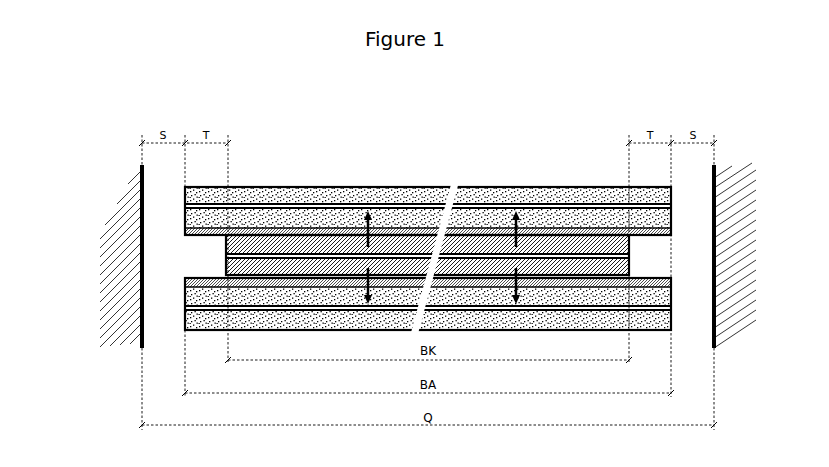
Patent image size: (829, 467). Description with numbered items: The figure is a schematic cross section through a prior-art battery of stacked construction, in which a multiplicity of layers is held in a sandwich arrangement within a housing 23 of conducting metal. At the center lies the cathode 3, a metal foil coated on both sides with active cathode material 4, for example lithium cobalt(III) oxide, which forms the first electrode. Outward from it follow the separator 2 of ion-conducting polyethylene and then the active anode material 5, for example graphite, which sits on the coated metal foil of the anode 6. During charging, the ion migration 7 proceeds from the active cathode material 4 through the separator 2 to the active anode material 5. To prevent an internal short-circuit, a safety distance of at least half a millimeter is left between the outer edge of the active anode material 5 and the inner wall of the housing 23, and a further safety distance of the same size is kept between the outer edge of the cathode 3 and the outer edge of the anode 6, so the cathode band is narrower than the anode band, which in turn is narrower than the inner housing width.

The separator 2 is at (350, 218).
The cathode 3 is at (225, 256).
The active cathode material 4 is at (220, 237).
The active anode material 5 is at (312, 226).
The anode 6 is at (558, 190).
The ion migration 7 is at (493, 211).
The housing 23 is at (120, 191).